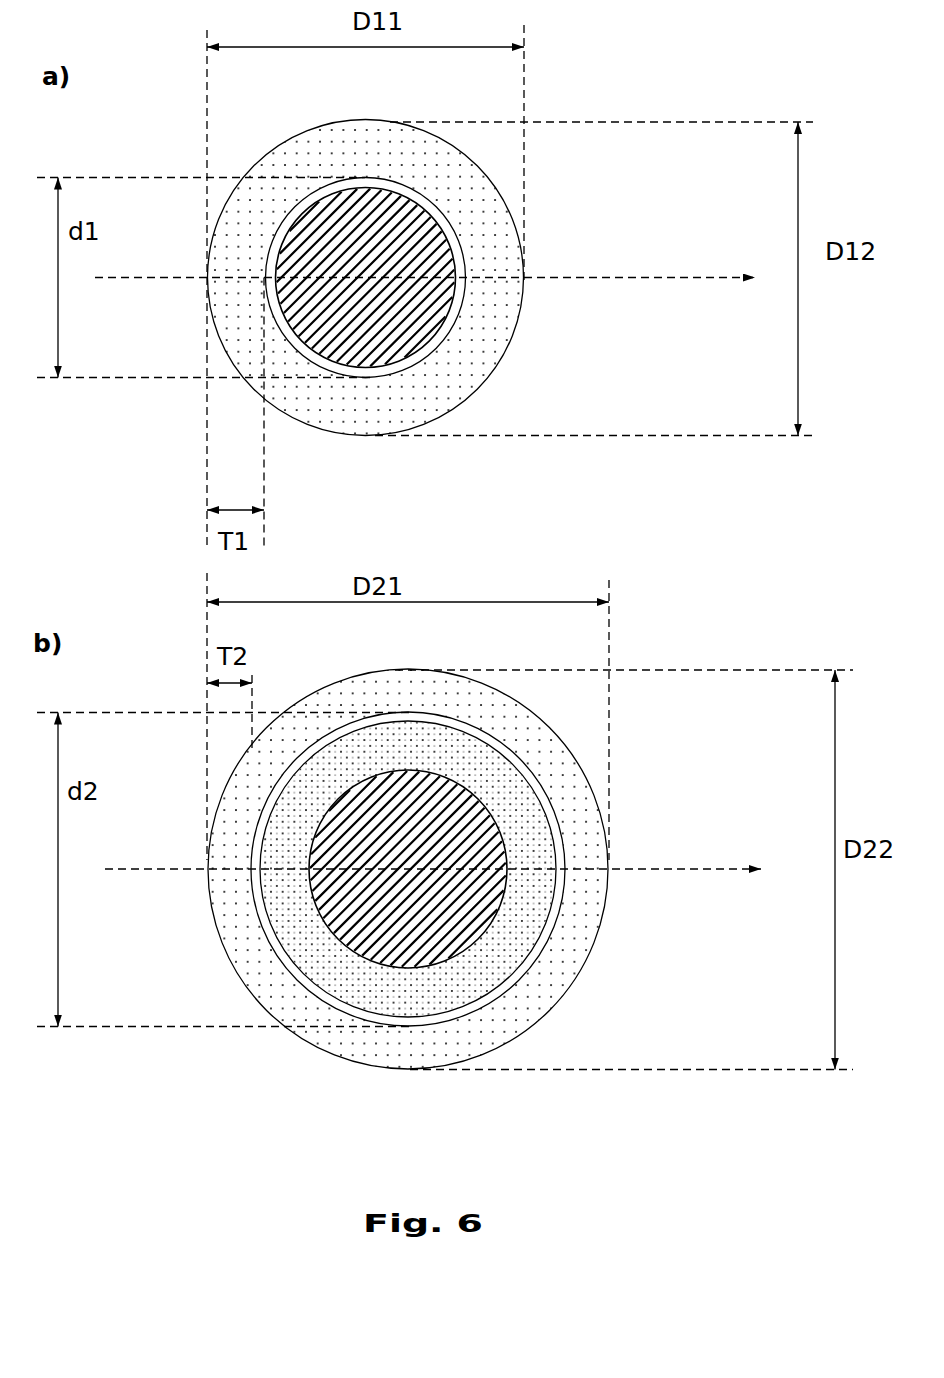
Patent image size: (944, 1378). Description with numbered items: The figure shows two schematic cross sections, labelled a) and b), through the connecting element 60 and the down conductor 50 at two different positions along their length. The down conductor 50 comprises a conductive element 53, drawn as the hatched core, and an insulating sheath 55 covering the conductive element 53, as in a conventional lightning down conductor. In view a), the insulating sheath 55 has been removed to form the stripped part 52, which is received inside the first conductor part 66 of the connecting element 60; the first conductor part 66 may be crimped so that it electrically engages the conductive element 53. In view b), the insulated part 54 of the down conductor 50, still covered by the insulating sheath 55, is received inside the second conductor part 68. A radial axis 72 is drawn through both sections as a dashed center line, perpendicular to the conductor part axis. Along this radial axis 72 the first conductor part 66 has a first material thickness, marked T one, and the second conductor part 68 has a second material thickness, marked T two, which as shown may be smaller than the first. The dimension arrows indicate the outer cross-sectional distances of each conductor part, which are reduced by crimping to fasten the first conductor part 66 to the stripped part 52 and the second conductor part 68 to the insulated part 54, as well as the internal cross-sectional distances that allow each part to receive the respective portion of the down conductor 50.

The down conductor 50 is at (486, 281).
The stripped part 52 is at (457, 323).
The conductive element 53 is at (437, 218).
The insulated part 54 is at (527, 975).
The insulating sheath 55 is at (512, 920).
The connecting element 60 is at (492, 594).
The first conductor part 66 is at (488, 255).
The second conductor part 68 is at (341, 1040).
The radial axis 72 is at (196, 278).